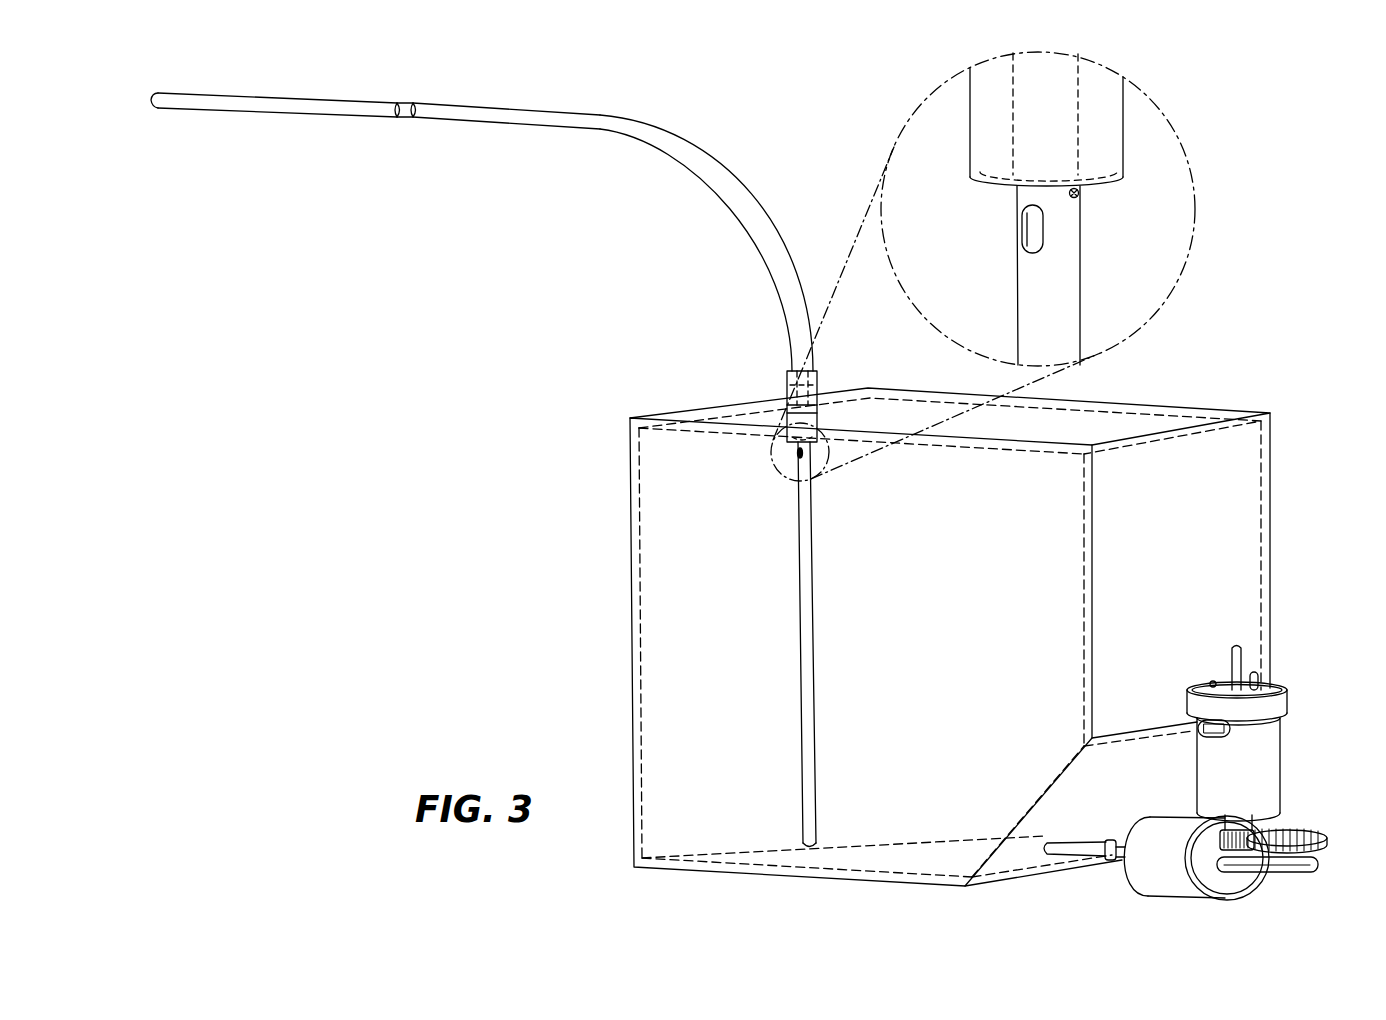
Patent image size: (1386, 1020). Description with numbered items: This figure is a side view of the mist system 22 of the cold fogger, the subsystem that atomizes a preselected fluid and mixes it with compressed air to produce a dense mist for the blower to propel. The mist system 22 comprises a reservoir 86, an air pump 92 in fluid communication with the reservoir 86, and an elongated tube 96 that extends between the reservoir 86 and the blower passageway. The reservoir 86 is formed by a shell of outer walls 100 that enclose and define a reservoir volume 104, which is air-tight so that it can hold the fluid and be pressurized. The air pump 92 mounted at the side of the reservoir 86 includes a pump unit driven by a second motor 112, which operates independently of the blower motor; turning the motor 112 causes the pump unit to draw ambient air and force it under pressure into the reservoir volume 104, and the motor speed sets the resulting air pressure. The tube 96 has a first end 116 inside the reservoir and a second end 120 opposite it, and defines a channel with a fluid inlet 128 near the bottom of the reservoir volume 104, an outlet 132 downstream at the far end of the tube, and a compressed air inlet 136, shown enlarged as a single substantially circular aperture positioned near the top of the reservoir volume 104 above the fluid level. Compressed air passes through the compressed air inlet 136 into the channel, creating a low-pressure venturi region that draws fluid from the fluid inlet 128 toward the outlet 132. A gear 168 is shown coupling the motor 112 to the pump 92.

The mist system 22 is at (724, 340).
The reservoir 86 is at (1270, 583).
The air pump 92 is at (1178, 882).
The tube 96 is at (725, 178).
The outer walls 100 is at (1272, 460).
The reservoir volume 104 is at (690, 678).
The second motor 112 is at (1264, 770).
The first end 116 is at (818, 812).
The second end 120 is at (217, 104).
The fluid inlet 128 is at (812, 848).
The outlet 132 is at (151, 101).
The compressed air inlet 136 is at (1035, 232).
The gear 168 is at (1248, 882).